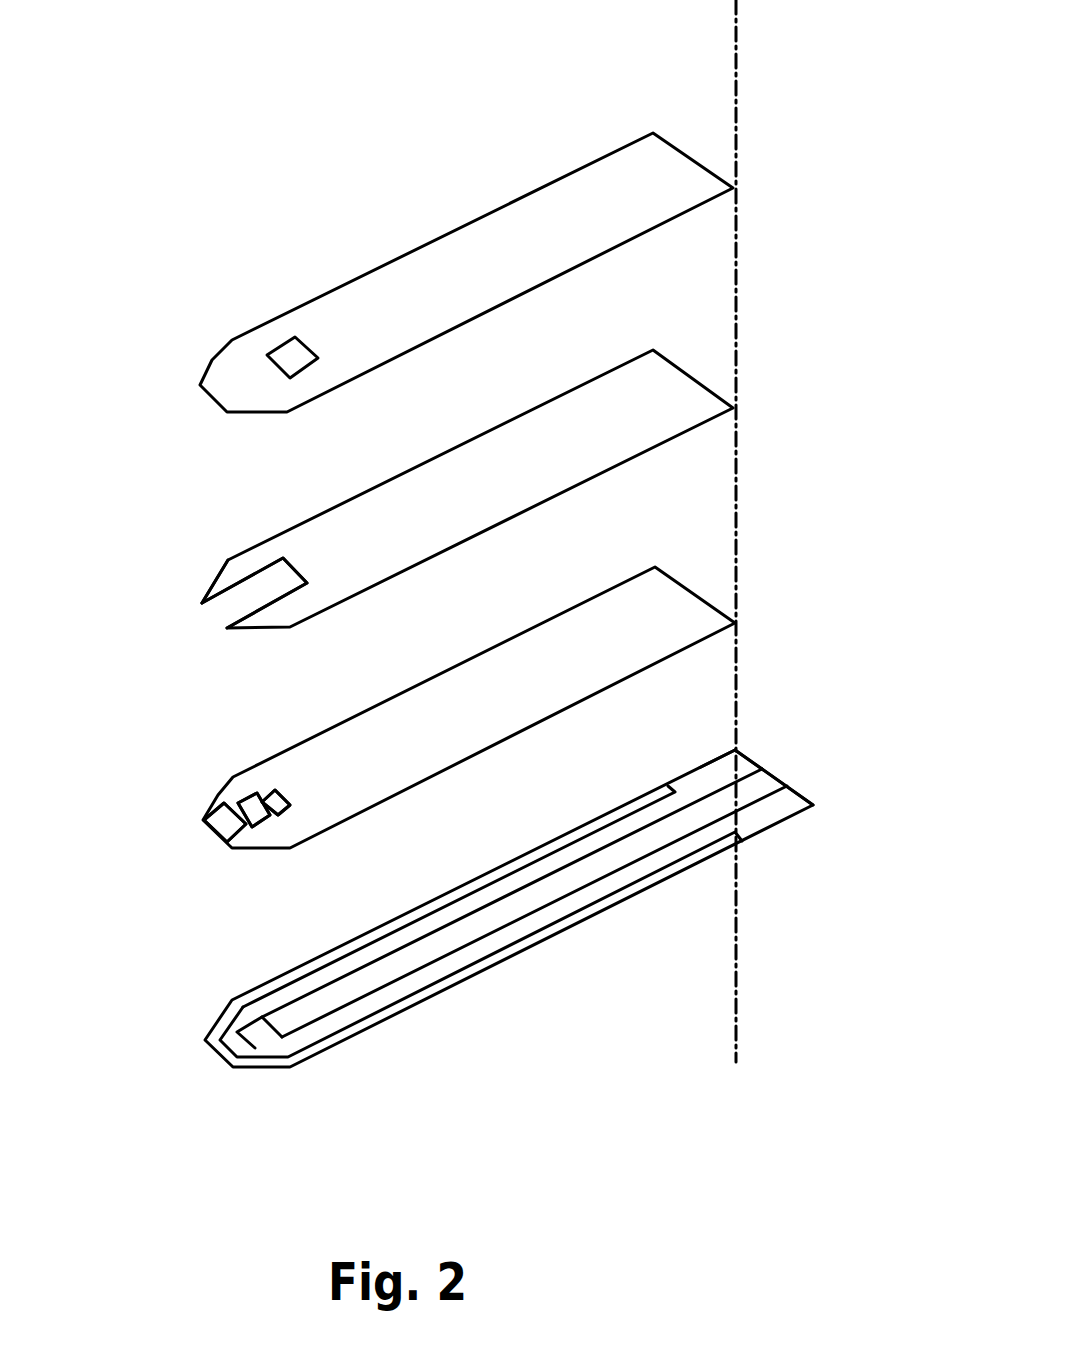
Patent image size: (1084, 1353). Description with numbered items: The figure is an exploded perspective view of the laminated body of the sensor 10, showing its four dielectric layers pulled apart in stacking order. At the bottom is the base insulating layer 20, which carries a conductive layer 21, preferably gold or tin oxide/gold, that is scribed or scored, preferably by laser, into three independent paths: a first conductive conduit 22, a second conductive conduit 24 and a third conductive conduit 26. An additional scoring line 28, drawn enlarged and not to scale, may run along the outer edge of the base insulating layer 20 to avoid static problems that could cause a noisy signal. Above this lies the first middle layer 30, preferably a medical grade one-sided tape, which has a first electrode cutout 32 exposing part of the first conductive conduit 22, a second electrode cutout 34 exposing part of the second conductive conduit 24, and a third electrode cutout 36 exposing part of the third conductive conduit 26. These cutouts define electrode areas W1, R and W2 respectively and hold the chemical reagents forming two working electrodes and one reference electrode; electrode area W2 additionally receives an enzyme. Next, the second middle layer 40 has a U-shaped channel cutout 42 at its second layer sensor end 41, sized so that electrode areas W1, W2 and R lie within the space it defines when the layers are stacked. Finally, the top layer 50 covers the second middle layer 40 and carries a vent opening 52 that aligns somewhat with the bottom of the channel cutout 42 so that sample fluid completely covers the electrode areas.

The sensor 10 is at (43, 140).
The base insulating layer 20 is at (642, 792).
The conductive layer 21 is at (480, 920).
The first conductive conduit 22 is at (715, 772).
The second conductive conduit 24 is at (752, 790).
The third conductive conduit 26 is at (783, 797).
The scoring line 28 is at (365, 1022).
The first middle layer 30 is at (435, 672).
The first electrode cutout 32 is at (220, 830).
The second electrode cutout 34 is at (262, 827).
The third electrode cutout 36 is at (292, 810).
The second middle layer 40 is at (577, 390).
The second layer sensor end 41 is at (202, 617).
The U-shaped channel cutout 42 is at (248, 587).
The top layer 50 is at (510, 202).
The vent opening 52 is at (290, 352).
The electrode area W1 is at (230, 823).
The electrode area W2 is at (275, 797).
The electrode area R is at (253, 810).